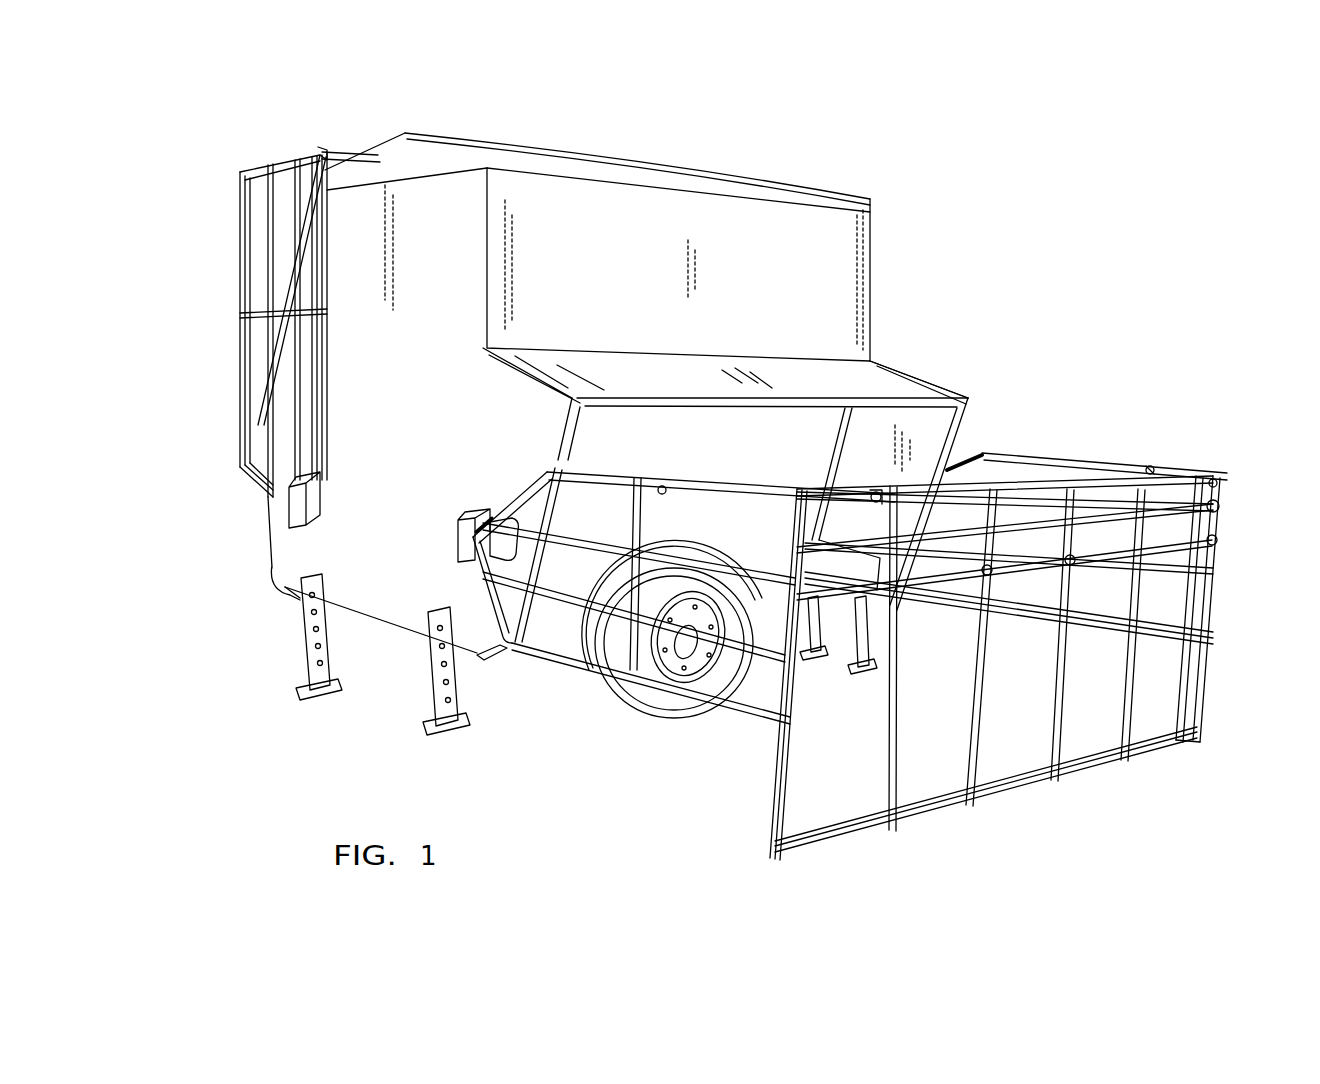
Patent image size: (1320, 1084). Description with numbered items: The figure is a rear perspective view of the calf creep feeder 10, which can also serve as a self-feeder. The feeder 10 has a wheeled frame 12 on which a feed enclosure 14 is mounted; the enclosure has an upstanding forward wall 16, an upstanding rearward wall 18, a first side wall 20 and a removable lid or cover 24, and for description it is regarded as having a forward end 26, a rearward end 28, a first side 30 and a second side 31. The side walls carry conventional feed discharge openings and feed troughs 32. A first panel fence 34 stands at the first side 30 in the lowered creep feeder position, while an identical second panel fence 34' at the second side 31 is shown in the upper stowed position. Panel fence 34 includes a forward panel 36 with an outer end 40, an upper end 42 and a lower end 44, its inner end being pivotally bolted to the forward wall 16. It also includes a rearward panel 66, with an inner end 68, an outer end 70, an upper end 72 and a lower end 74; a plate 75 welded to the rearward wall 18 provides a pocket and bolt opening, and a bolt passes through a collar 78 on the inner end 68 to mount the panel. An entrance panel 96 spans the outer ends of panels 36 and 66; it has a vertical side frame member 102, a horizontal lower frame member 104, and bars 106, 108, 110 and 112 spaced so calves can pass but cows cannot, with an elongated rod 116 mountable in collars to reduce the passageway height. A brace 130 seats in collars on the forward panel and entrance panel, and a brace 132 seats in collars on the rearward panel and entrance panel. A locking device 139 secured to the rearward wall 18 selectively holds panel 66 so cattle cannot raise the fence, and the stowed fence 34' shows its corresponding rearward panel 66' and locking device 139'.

The creep feeder 10 is at (832, 160).
The wheeled frame 12 is at (613, 703).
The feed enclosure 14 is at (578, 150).
The forward wall 16 is at (928, 403).
The rearward wall 18 is at (347, 523).
The first side wall 20 is at (850, 243).
The lid or cover 24 is at (718, 172).
The forward end 26 is at (892, 278).
The rearward end 28 is at (250, 548).
The first side 30 is at (983, 387).
The second side 31 is at (230, 497).
The feed trough 32 is at (767, 590).
The first panel fence 34 is at (1049, 449).
The second panel fence 34' is at (221, 322).
The forward panel 36 is at (1162, 614).
The outer end of forward panel 40 is at (1218, 565).
The upper end of forward panel 42 is at (1040, 455).
The lower end of forward panel 44 is at (1038, 615).
The rearward panel 66 is at (651, 718).
The rearward panel of second panel fence 66' is at (219, 290).
The inner end of rearward panel 68 is at (513, 500).
The outer end of rearward panel 70 is at (740, 713).
The upper end of rearward panel 72 is at (623, 473).
The lower end of rearward panel 74 is at (587, 680).
The plate 75 is at (470, 490).
The collar 78 is at (463, 543).
The entrance panel 96 is at (1032, 793).
The side frame member 102 is at (770, 810).
The lower frame member 104 is at (1127, 700).
The bar 106 is at (1200, 738).
The bar 108 is at (1108, 760).
The bar 110 is at (957, 760).
The bar 112 is at (890, 760).
The elongated rod 116 is at (1216, 510).
The brace 130 is at (1150, 467).
The brace 132 is at (737, 483).
The locking device 139 is at (470, 682).
The locking device of second panel fence 139' is at (282, 637).